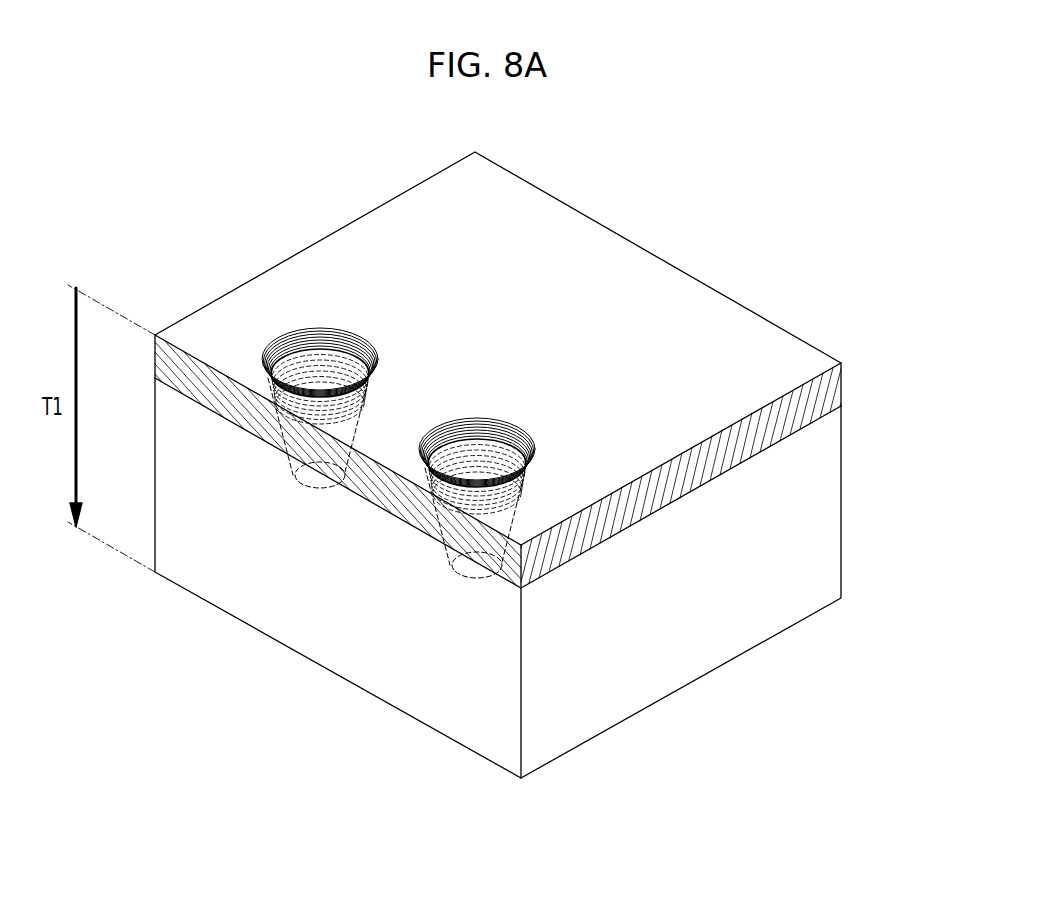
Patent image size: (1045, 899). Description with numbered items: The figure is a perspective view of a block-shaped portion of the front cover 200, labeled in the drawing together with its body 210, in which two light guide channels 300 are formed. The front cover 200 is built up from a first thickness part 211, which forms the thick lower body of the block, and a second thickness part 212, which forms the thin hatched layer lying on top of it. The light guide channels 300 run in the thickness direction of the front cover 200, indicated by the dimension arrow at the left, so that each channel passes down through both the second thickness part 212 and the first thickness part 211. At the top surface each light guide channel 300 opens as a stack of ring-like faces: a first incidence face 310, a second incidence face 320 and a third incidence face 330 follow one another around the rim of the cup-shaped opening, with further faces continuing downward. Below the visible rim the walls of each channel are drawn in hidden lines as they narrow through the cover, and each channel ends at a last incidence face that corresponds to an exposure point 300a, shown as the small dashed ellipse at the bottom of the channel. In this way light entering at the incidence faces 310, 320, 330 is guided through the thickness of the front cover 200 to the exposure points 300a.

The front cover 200 is at (538, 517).
The substrate body 210 is at (557, 762).
The first thickness part 211 is at (828, 488).
The second thickness part 212 is at (828, 390).
The light guide channel 300 is at (386, 359).
The exposure point 300a is at (312, 487).
The first incidence face 310 is at (347, 333).
The second incidence face 320 is at (307, 333).
The third incidence face 330 is at (273, 352).